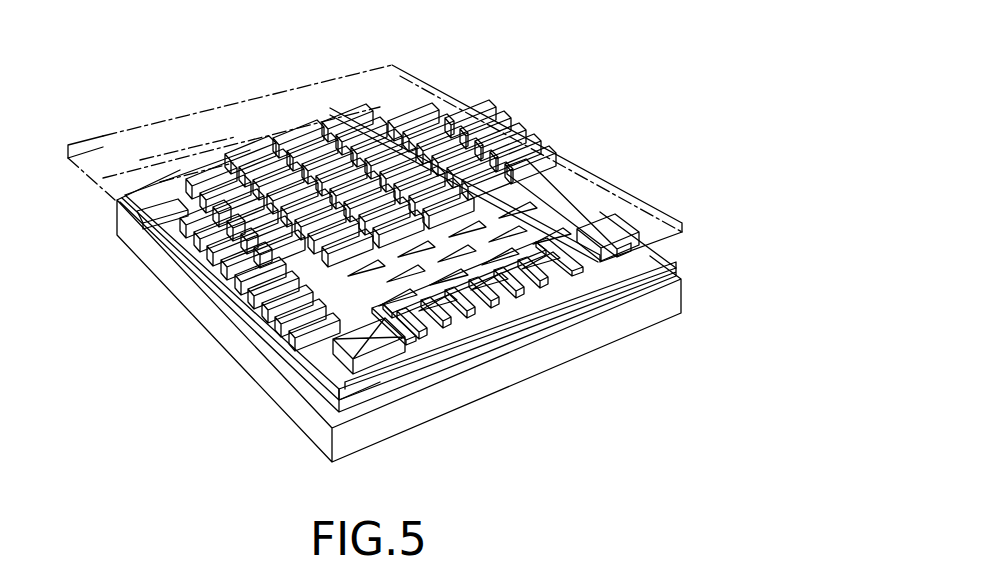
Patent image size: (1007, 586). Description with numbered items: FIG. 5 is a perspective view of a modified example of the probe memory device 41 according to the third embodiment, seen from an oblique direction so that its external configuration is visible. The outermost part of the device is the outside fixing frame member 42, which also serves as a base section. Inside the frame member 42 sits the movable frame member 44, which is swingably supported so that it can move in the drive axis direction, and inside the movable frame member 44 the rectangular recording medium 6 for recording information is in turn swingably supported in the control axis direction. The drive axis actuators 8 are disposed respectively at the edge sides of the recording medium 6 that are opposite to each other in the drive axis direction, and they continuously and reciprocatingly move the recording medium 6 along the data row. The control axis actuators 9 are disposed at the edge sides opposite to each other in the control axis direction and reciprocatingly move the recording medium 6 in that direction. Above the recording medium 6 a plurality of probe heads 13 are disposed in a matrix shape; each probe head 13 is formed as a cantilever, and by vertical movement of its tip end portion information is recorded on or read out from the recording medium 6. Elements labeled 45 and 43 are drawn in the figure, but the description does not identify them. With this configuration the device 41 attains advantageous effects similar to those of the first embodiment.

The probe memory device 41 is at (602, 70).
The recording medium 6 is at (598, 168).
The probe heads 13 is at (452, 160).
The rim portion 45 is at (573, 273).
The movable frame member 44 is at (142, 224).
The control axis actuator 9 is at (225, 257).
The outside fixing frame member 42 is at (228, 347).
The rim bar 43 is at (414, 373).
The drive axis actuator 8 is at (502, 335).